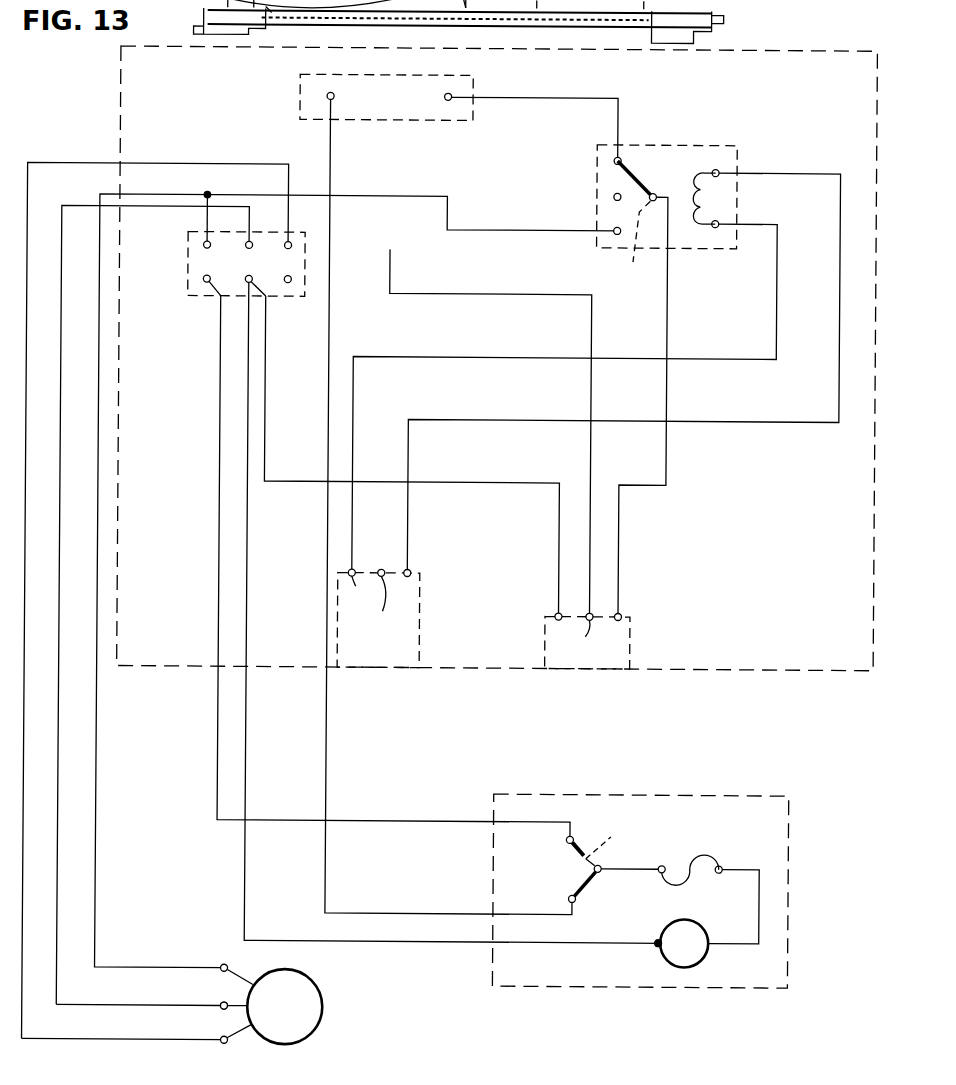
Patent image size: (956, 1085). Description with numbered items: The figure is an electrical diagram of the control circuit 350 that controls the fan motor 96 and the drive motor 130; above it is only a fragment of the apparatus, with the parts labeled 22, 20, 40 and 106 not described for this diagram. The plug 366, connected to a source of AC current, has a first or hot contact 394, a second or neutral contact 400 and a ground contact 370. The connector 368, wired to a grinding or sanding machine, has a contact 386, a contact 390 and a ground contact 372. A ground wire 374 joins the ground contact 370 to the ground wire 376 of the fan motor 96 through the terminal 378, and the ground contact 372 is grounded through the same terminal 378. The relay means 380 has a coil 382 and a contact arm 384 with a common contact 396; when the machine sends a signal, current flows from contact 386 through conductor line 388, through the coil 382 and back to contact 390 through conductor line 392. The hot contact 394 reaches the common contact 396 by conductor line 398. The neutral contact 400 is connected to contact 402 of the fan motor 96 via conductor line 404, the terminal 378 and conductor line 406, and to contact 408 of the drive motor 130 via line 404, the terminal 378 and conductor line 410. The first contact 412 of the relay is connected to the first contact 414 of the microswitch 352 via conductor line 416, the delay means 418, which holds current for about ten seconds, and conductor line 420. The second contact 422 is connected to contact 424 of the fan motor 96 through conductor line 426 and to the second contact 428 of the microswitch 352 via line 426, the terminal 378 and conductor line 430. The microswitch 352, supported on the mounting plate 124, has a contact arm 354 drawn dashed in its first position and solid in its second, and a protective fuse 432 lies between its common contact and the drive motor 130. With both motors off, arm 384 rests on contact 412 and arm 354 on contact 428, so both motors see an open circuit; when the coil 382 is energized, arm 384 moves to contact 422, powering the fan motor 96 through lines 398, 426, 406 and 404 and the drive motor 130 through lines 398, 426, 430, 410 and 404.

The frame 22 is at (215, 32).
The roller 20 is at (264, 6).
The platform 40 is at (468, 6).
The bracket 106 is at (627, 7).
The control circuit 350 is at (113, 103).
The ground wire 376 is at (41, 163).
The conductor line 406 is at (161, 210).
The conductor line 426 is at (490, 228).
The contact 424 is at (226, 966).
The contact 402 is at (224, 1004).
The fan motor 96 is at (305, 1006).
The terminal 378 is at (192, 299).
The conductor line 404 is at (266, 308).
The conductor line 430 is at (217, 440).
The conductor line 410 is at (249, 536).
The conductor line 420 is at (329, 158).
The delay means 418 is at (410, 122).
The conductor line 416 is at (551, 94).
The relay means 380 is at (718, 142).
The first contact 412 is at (611, 160).
The common contact 396 is at (660, 186).
The contact arm 384 is at (641, 180).
The second contact 422 is at (612, 233).
The conductor line 398 is at (666, 398).
The coil 382 is at (716, 200).
The conductor line 392 is at (810, 166).
The conductor line 388 is at (775, 308).
The ground wire 374 is at (591, 455).
The connector 368 is at (420, 623).
The contact 386 is at (358, 590).
The ground contact 372 is at (375, 603).
The contact 390 is at (411, 571).
The plug 366 is at (631, 650).
The second contact 400 is at (556, 615).
The ground contact 370 is at (585, 637).
The first contact 394 is at (622, 613).
The mounting plate 124 is at (775, 797).
The second contact 428 is at (568, 841).
The contact arm 354 is at (598, 892).
The microswitch 352 is at (562, 870).
The first contact 414 is at (570, 898).
The protective fuse 432 is at (712, 864).
The contact 408 is at (657, 944).
The drive motor 130 is at (680, 956).